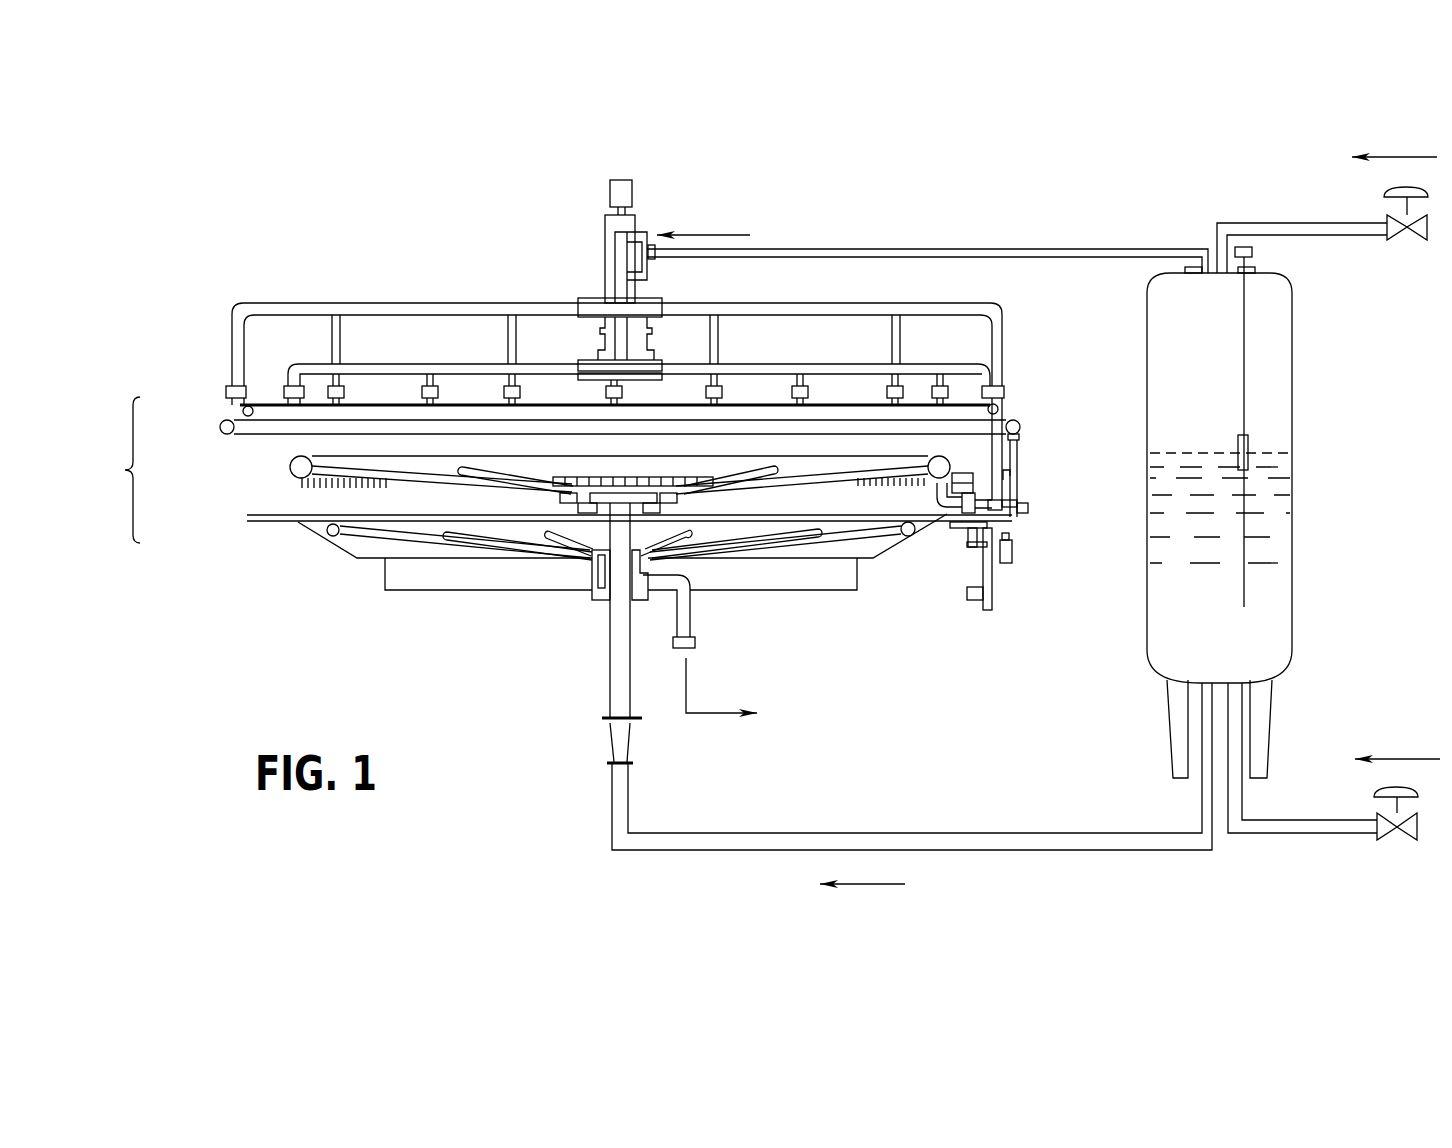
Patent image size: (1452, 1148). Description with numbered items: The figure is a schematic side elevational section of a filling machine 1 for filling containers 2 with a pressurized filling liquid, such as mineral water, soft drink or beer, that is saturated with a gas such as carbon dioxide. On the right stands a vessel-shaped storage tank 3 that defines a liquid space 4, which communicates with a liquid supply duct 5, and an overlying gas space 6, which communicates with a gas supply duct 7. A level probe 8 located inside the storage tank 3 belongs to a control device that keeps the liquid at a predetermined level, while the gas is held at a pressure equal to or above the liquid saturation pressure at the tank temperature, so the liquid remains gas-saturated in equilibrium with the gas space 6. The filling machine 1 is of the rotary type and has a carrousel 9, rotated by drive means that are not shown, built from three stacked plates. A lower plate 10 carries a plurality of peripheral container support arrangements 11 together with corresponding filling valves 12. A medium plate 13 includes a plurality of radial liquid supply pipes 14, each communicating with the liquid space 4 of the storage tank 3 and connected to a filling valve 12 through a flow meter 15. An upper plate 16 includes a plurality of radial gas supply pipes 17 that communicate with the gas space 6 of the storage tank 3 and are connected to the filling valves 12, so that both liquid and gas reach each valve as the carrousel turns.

The filling machine 1 is at (428, 217).
The container 2 is at (1012, 548).
The storage tank 3 is at (1293, 396).
The liquid space 4 is at (1263, 592).
The liquid supply duct 5 is at (1313, 835).
The gas space 6 is at (1273, 337).
The gas supply duct 7 is at (1313, 222).
The level probe 8 is at (1249, 438).
The carrousel 9 is at (121, 470).
The lower plate 10 is at (243, 518).
The container support arrangement 11 is at (975, 565).
The filling valve 12 is at (1020, 489).
The medium plate 13 is at (288, 468).
The radial liquid supply pipe 14 is at (830, 480).
The flow meter 15 is at (955, 477).
The upper plate 16 is at (218, 427).
The radial gas supply pipe 17 is at (828, 372).